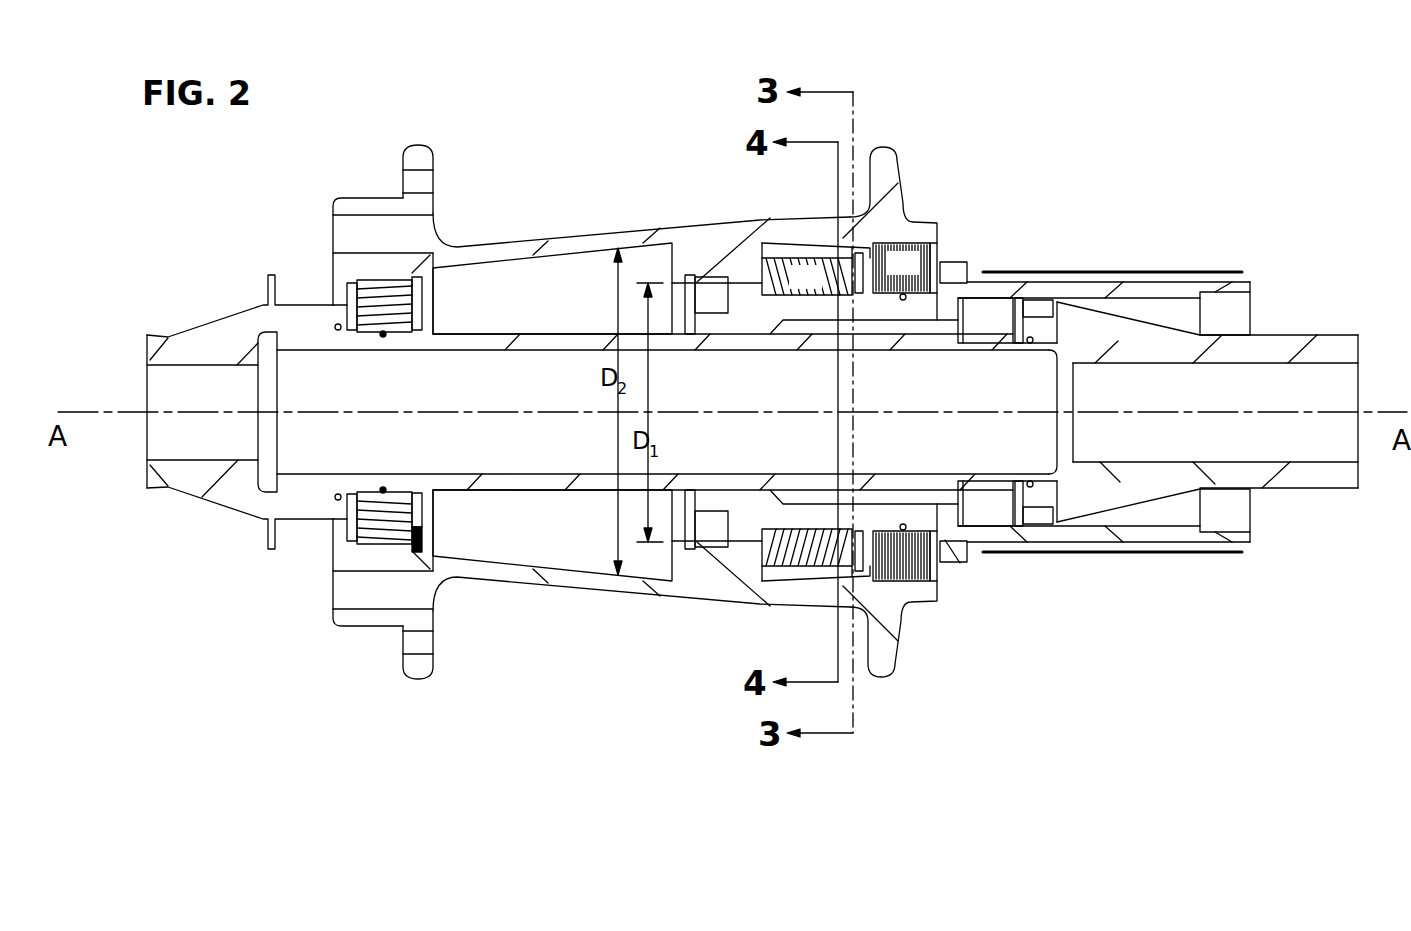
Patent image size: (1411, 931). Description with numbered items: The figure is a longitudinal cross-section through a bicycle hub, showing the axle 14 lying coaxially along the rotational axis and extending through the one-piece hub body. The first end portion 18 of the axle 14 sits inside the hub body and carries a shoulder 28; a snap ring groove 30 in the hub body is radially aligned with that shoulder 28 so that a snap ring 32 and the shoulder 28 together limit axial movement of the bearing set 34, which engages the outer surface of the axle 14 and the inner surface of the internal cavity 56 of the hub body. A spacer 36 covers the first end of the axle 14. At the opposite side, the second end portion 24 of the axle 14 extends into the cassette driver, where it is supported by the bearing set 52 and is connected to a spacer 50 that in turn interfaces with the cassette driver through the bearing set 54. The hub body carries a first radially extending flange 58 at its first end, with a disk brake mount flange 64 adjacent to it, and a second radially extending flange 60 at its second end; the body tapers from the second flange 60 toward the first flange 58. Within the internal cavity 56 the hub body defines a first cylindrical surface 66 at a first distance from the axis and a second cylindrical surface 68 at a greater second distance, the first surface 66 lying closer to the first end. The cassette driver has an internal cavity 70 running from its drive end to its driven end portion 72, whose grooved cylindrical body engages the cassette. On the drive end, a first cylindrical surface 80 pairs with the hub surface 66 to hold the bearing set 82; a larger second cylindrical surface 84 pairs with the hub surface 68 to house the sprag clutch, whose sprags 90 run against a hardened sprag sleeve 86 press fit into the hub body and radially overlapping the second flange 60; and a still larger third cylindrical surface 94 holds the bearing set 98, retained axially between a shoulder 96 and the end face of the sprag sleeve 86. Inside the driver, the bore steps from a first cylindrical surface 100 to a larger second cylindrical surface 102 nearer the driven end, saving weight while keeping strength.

The axle 14 is at (485, 343).
The first end portion of the axle 18 is at (298, 392).
The second end portion of the axle 24 is at (1014, 381).
The shoulder 28 is at (420, 497).
The snap ring groove 30 is at (425, 555).
The snap ring 32 is at (430, 537).
The bearing set 34 is at (371, 317).
The spacer 36 is at (201, 354).
The spacer 50 is at (1129, 361).
The bearing set 52 is at (971, 334).
The bearing set 54 is at (1211, 327).
The internal cavity 56 is at (544, 309).
The first radially extending flange 58 is at (420, 142).
The second radially extending flange 60 is at (888, 145).
The disk brake mount flange 64 is at (343, 195).
The first cylindrical surface 66 is at (715, 542).
The second cylindrical surface 68 is at (803, 583).
The internal cavity 70 is at (1164, 327).
The driven end portion 72 is at (1196, 253).
The first cylindrical surface 80 is at (737, 312).
The bearing set 82 is at (697, 311).
The second cylindrical surface 84 is at (870, 297).
The sprag sleeve 86 is at (787, 248).
The sprags 90 is at (791, 291).
The third cylindrical surface 94 is at (923, 295).
The shoulder 96 is at (953, 273).
The bearing set 98 is at (889, 277).
The first cylindrical surface 100 is at (722, 492).
The second cylindrical surface 102 is at (878, 500).